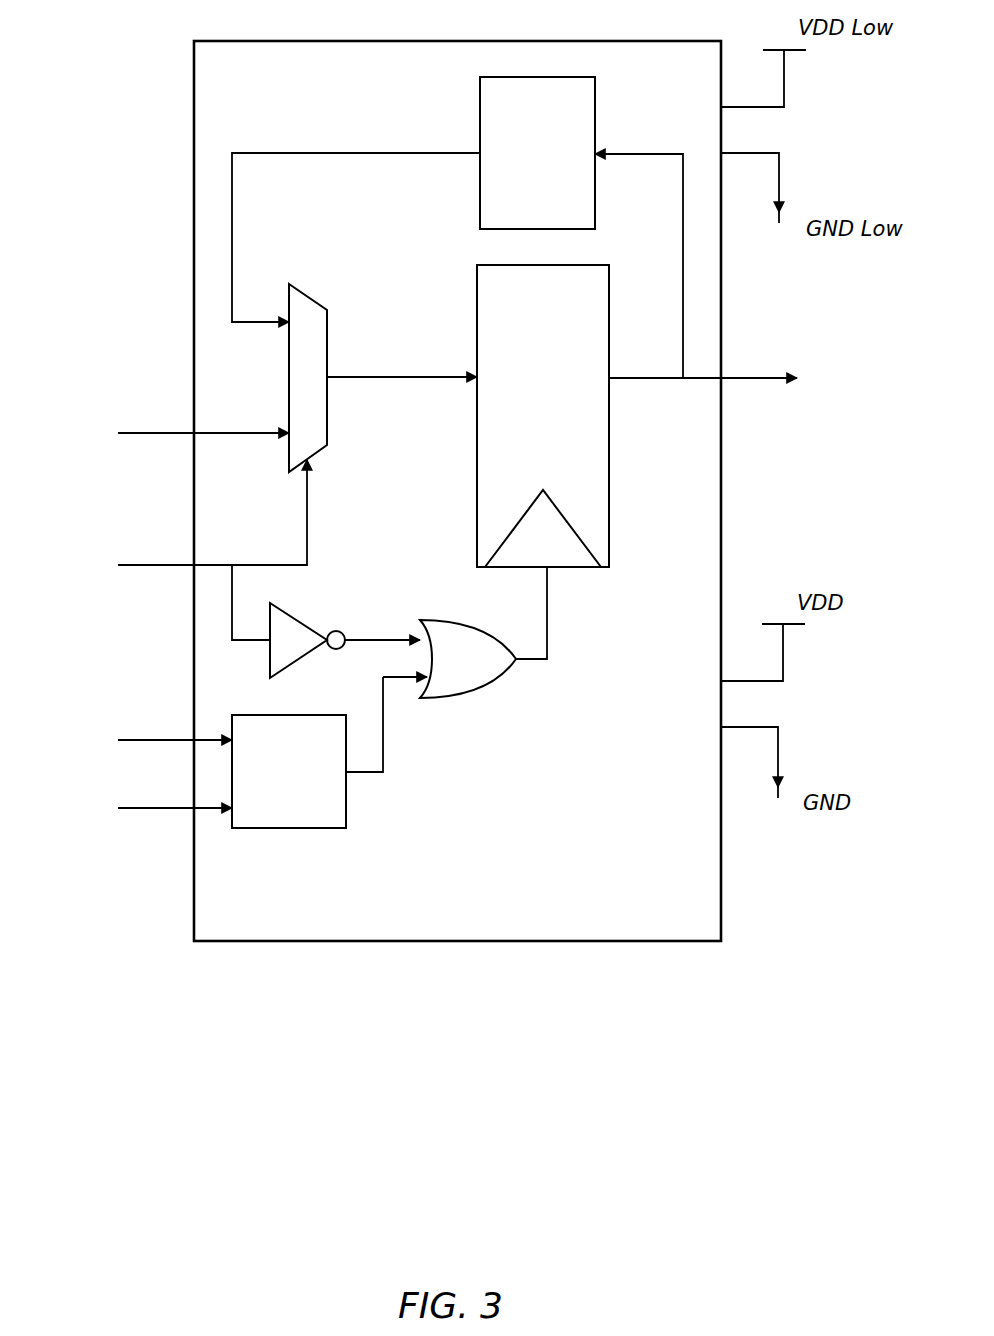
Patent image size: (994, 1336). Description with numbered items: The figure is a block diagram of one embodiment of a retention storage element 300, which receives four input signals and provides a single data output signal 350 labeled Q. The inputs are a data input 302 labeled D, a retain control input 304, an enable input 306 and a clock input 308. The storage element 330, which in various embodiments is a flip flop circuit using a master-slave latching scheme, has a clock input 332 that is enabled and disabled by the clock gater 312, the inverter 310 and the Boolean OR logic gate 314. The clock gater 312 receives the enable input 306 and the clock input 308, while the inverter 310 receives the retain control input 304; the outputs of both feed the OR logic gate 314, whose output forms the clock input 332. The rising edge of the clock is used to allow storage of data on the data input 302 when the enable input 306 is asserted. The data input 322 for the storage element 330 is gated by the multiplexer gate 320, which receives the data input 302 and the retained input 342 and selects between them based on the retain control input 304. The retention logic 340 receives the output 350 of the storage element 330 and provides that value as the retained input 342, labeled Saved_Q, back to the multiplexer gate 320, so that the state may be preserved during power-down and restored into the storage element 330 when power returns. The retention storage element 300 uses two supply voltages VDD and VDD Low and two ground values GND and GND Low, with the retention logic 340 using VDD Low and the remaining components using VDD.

The retention storage element 300 is at (457, 491).
The data input 302 is at (148, 432).
The retain control input 304 is at (148, 564).
The enable input 306 is at (148, 739).
The clock input 308 is at (148, 807).
The inverter 310 is at (299, 615).
The clock gater 312 is at (289, 771).
The Boolean OR logic gate 314 is at (431, 696).
The multiplexer gate 320 is at (317, 301).
The data input for the storage element 322 is at (401, 376).
The storage element 330 is at (543, 416).
The clock input 332 is at (548, 621).
The retention logic 340 is at (537, 153).
The retained input 342 is at (268, 151).
The data output signal 350 is at (750, 376).